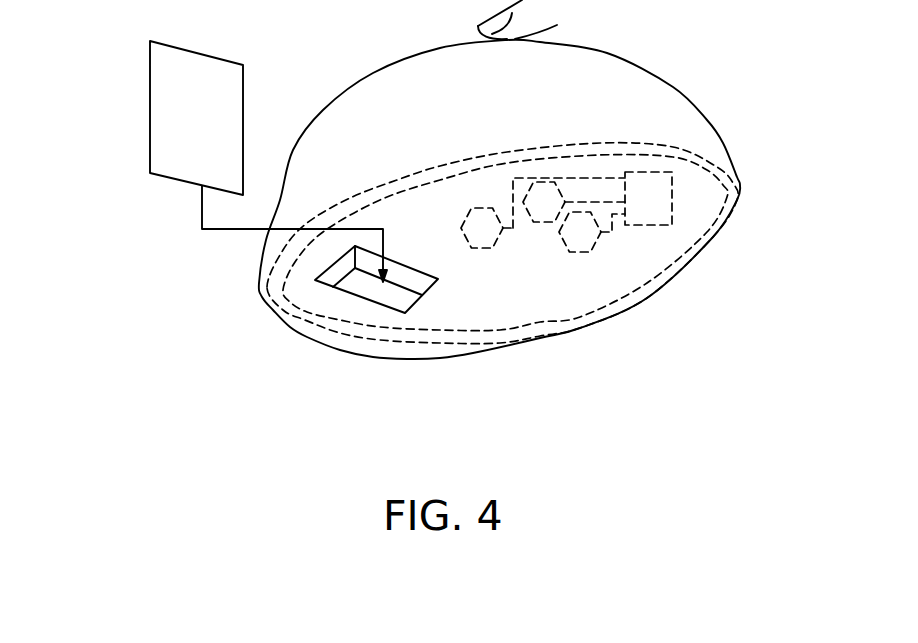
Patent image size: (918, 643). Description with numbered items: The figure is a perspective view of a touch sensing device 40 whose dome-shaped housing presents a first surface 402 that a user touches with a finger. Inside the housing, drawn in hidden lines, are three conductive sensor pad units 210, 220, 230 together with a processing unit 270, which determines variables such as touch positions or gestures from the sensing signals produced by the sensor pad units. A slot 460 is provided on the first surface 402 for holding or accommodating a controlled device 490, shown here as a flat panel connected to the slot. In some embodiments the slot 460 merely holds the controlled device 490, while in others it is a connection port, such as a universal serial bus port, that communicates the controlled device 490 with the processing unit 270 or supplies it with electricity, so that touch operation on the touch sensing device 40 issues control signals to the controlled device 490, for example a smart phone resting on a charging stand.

The touch sensing device 40 is at (770, 413).
The first surface 402 is at (722, 145).
The controlled device 490 is at (167, 117).
The slot 460 is at (388, 297).
The conductive sensor pad unit 210 is at (483, 248).
The conductive sensor pad unit 220 is at (547, 222).
The conductive sensor pad unit 230 is at (595, 252).
The processing unit 270 is at (645, 207).